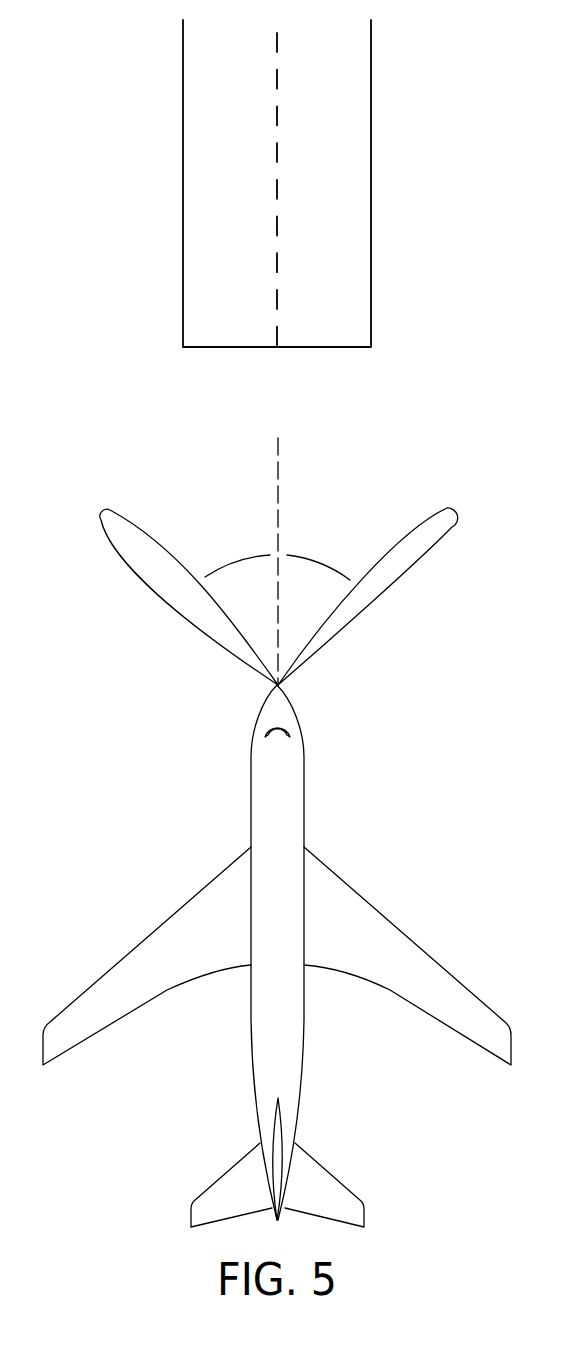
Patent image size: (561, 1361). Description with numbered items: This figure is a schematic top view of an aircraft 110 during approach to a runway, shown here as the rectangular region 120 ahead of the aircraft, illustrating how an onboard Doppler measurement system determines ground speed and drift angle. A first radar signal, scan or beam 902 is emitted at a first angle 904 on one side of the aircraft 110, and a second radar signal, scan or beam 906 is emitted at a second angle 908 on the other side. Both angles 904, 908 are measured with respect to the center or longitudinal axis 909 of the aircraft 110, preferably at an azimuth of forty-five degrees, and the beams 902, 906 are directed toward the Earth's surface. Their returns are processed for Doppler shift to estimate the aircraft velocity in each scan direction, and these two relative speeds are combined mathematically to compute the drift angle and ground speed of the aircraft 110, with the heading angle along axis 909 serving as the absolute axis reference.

The wing sweep reference / forward flight position 120 is at (358, 82).
The center axis or longitudinal axis 909 is at (278, 467).
The first radar signal, scan or beam 902 is at (118, 530).
The second radar signal, scan or beam 906 is at (437, 530).
The first angle 904 is at (237, 554).
The second angle 908 is at (318, 555).
The aircraft 110 is at (287, 1043).